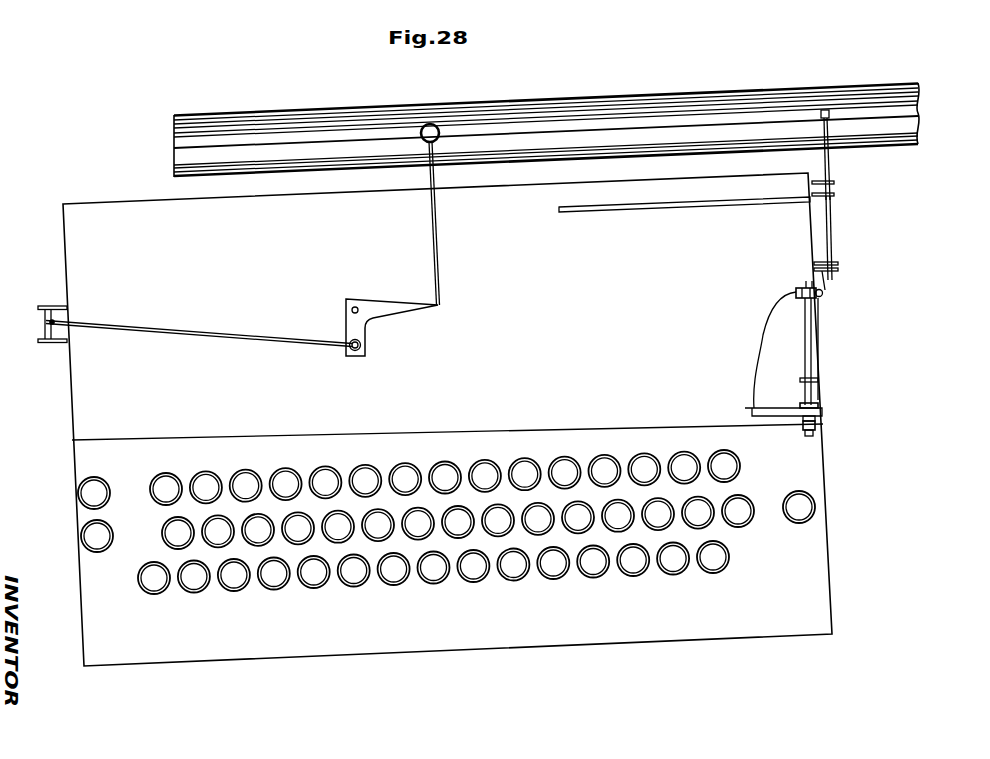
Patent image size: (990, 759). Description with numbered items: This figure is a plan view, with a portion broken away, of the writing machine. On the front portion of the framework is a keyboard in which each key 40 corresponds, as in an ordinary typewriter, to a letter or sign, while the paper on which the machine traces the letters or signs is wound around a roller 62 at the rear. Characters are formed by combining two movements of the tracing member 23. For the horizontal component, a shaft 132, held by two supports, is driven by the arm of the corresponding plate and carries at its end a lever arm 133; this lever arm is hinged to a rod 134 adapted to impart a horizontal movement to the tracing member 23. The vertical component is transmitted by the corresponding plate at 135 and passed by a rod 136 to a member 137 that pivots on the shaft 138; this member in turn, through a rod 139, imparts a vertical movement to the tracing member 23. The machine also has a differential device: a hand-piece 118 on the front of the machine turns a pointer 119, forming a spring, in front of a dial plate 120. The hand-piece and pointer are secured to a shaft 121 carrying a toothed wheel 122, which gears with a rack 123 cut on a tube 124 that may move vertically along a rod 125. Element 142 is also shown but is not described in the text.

The tracing member 23 is at (425, 129).
The rod 134 is at (550, 127).
The lever arm 133 is at (827, 112).
The roller 62 is at (906, 127).
The rod 139 is at (440, 243).
The plate 142 is at (702, 206).
The shaft 132 is at (832, 233).
The plate 135 is at (44, 318).
The rod 136 is at (227, 334).
The shaft 138 is at (352, 311).
The member 137 is at (358, 334).
The toothed wheel 122 is at (792, 294).
The tube 124 is at (822, 295).
The rack 123 is at (815, 300).
The rod 125 is at (822, 298).
The shaft 121 is at (806, 360).
The dial plate 120 is at (771, 417).
The pointer 119 is at (822, 415).
The hand-piece 118 is at (810, 437).
The key 40 is at (512, 572).